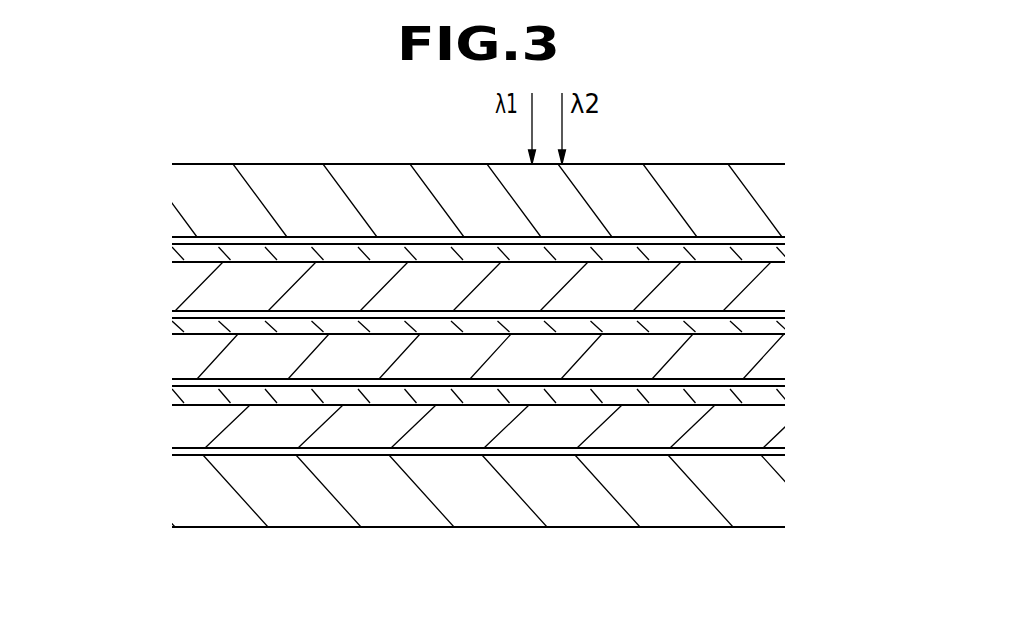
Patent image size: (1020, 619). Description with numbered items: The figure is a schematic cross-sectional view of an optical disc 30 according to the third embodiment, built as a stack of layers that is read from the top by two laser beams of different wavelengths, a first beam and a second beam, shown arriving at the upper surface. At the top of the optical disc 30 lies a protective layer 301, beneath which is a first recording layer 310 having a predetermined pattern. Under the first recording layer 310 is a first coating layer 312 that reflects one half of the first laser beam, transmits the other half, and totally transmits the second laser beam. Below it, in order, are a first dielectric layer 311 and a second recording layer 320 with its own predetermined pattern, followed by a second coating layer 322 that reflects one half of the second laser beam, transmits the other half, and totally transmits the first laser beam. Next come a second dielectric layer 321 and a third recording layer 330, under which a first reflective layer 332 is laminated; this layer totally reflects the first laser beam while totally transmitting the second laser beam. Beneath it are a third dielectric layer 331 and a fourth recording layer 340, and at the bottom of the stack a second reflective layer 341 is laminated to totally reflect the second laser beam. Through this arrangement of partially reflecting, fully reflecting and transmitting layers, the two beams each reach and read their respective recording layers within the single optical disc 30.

The optical disc 30 is at (248, 163).
The protective layer 301 is at (168, 202).
The first recording layer 310 is at (168, 238).
The first dielectric layer 311 is at (783, 285).
The first coating layer 312 is at (783, 249).
The second recording layer 320 is at (170, 315).
The second dielectric layer 321 is at (785, 355).
The second coating layer 322 is at (783, 324).
The third recording layer 330 is at (168, 383).
The third dielectric layer 331 is at (783, 425).
The first reflective layer 332 is at (783, 395).
The fourth recording layer 340 is at (170, 452).
The second reflective layer 341 is at (175, 498).